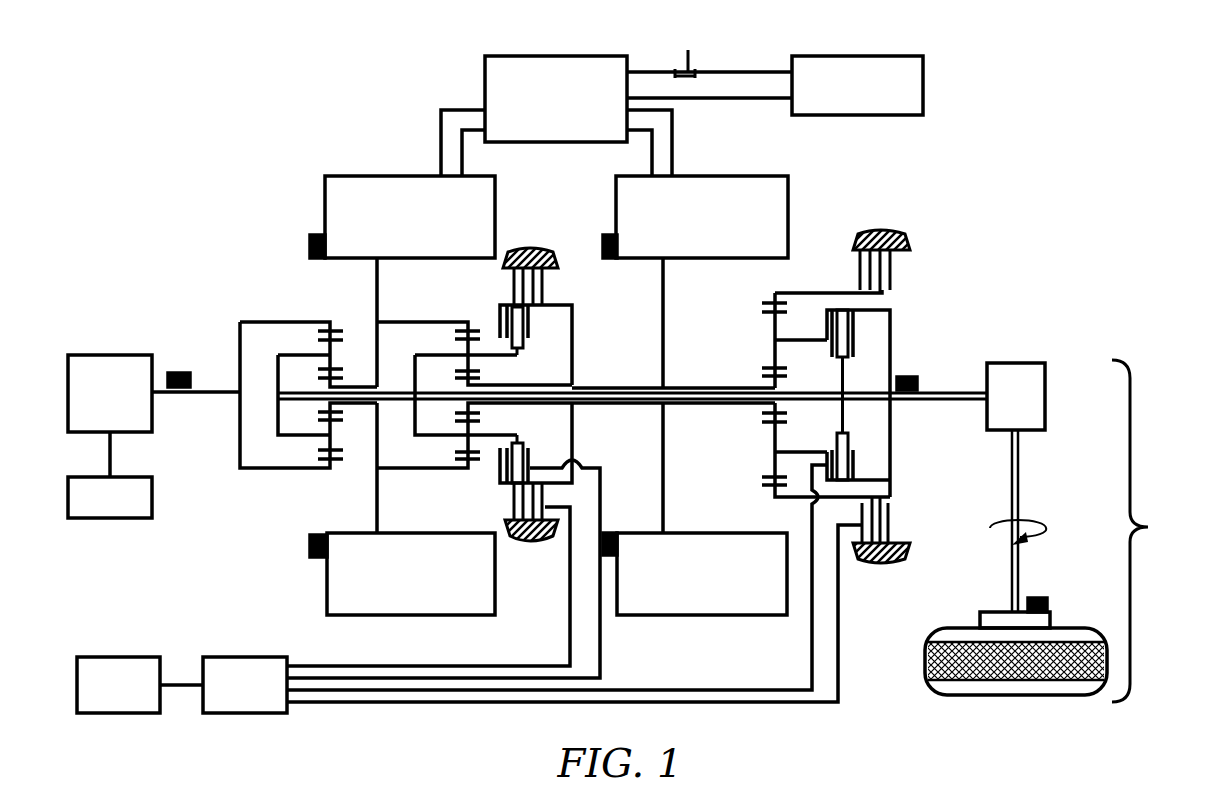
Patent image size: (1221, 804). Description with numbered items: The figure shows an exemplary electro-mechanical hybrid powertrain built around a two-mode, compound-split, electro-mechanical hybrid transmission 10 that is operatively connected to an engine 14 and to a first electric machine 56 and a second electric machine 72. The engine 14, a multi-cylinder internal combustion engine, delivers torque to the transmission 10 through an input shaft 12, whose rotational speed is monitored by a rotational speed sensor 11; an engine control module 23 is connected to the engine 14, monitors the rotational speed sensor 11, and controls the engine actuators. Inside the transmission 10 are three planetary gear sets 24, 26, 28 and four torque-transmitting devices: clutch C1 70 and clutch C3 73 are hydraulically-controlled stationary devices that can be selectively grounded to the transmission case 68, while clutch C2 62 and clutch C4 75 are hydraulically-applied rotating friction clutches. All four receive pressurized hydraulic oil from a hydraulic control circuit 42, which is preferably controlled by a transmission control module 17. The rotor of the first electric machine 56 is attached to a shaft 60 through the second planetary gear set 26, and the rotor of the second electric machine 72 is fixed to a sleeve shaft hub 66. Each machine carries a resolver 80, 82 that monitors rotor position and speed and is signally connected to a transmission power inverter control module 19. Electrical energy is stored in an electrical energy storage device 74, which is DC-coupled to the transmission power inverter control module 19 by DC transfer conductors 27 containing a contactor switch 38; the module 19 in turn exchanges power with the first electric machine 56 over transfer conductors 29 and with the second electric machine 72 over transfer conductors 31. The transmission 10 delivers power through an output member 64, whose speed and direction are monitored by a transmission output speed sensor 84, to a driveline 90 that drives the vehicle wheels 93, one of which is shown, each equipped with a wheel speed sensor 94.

The electro-mechanical hybrid transmission 10 is at (290, 142).
The rotational speed sensor 11 is at (180, 372).
The input shaft 12 is at (220, 388).
The engine 14 is at (110, 393).
The transmission control module 17 is at (140, 685).
The transmission power inverter control module 19 is at (556, 99).
The engine control module 23 is at (110, 475).
The first planetary gear set 24 is at (320, 316).
The second planetary gear set 26 is at (462, 316).
The DC transfer conductors 27 is at (645, 72).
The third planetary gear set 28 is at (763, 294).
The transfer conductors 29 is at (440, 133).
The transfer conductors 31 is at (672, 135).
The contactor switch 38 is at (686, 62).
The hydraulic control circuit 42 is at (532, 586).
The first electric machine 56 is at (396, 589).
The shaft 60 is at (818, 392).
The clutch C2 62 is at (859, 337).
The output member 64 is at (960, 392).
The sleeve shaft hub 66 is at (683, 388).
The transmission case 68 is at (530, 250).
The clutch C1 70 is at (855, 264).
The second electric machine 72 is at (686, 589).
The clutch C3 73 is at (547, 289).
The electrical energy storage device 74 is at (857, 85).
The clutch C4 75 is at (537, 333).
The resolver 80 is at (309, 246).
The resolver 82 is at (605, 235).
The transmission output speed sensor 84 is at (913, 375).
The driveline 90 is at (1043, 531).
The vehicle wheel 93 is at (978, 620).
The wheel speed sensor 94 is at (1040, 598).